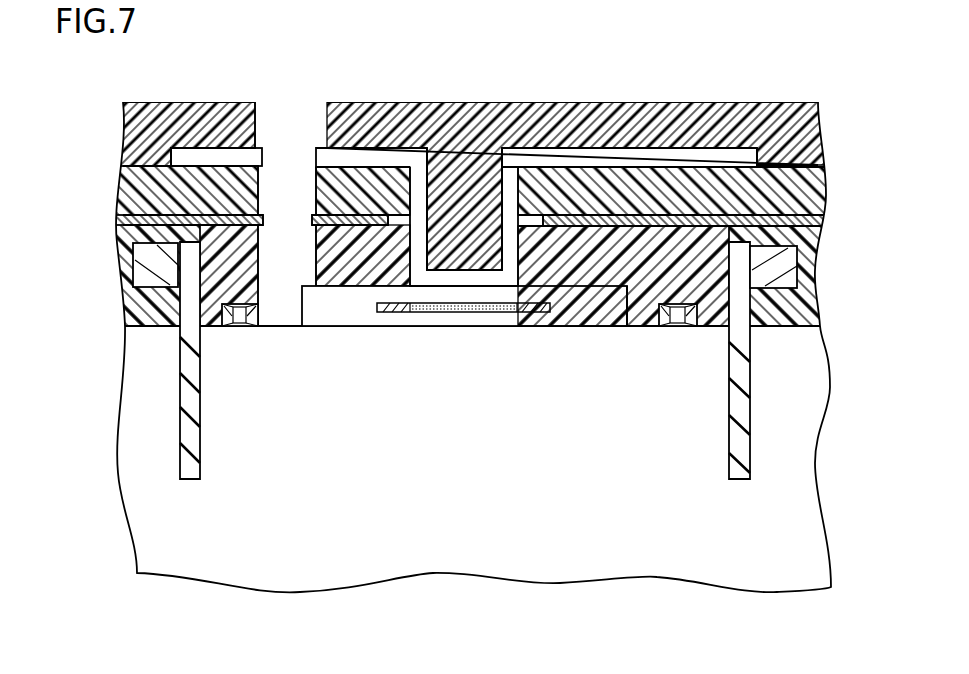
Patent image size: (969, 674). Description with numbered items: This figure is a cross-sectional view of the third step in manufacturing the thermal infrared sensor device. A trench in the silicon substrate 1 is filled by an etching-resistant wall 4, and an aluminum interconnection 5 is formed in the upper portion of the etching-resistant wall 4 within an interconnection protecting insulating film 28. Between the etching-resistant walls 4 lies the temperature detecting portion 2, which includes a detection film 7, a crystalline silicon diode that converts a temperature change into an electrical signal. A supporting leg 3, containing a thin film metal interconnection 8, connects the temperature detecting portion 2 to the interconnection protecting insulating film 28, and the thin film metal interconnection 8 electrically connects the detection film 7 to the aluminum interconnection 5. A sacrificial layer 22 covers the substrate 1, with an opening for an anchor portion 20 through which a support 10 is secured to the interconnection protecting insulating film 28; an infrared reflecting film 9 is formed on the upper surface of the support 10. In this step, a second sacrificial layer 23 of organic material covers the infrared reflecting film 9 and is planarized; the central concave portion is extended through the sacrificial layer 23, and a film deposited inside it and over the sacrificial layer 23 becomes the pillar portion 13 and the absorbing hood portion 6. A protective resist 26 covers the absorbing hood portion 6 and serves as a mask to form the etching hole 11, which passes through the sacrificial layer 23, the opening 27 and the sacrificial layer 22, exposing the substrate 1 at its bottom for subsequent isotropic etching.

The substrate 1 is at (778, 532).
The temperature detecting portion 2 is at (337, 312).
The supporting leg 3 is at (755, 318).
The etching-resistant wall 4 is at (740, 412).
The aluminum interconnection 5 is at (773, 268).
The absorbing hood portion 6 is at (633, 158).
The detection film 7 is at (472, 312).
The thin film metal interconnection 8 is at (678, 318).
The infrared reflecting film 9 is at (795, 203).
The support 10 is at (790, 227).
The etching hole 11 is at (288, 182).
The pillar portion 13 is at (512, 200).
The anchor portion 20 is at (142, 232).
The sacrificial layer 22 is at (220, 283).
The sacrificial layer 23 is at (153, 192).
The protective resist 26 is at (386, 125).
The opening 27 is at (287, 218).
The interconnection protecting insulating film 28 is at (150, 262).